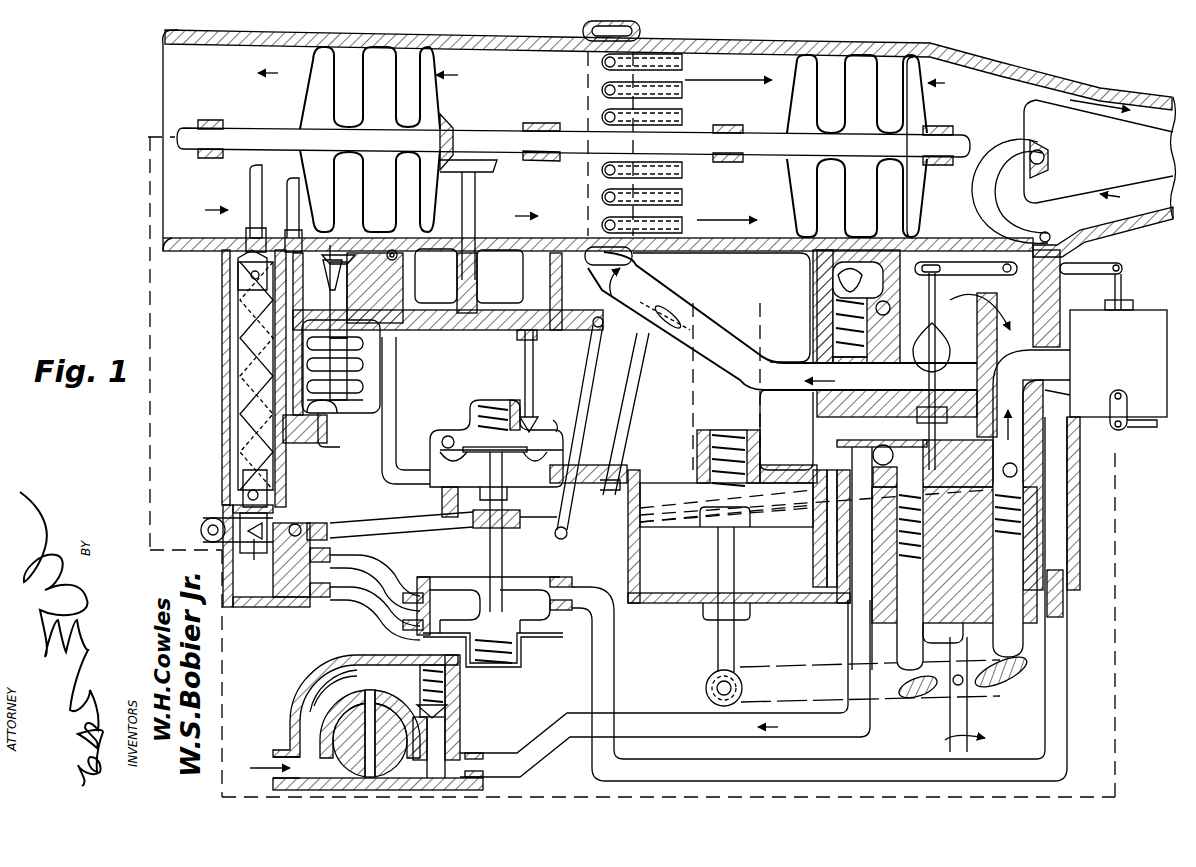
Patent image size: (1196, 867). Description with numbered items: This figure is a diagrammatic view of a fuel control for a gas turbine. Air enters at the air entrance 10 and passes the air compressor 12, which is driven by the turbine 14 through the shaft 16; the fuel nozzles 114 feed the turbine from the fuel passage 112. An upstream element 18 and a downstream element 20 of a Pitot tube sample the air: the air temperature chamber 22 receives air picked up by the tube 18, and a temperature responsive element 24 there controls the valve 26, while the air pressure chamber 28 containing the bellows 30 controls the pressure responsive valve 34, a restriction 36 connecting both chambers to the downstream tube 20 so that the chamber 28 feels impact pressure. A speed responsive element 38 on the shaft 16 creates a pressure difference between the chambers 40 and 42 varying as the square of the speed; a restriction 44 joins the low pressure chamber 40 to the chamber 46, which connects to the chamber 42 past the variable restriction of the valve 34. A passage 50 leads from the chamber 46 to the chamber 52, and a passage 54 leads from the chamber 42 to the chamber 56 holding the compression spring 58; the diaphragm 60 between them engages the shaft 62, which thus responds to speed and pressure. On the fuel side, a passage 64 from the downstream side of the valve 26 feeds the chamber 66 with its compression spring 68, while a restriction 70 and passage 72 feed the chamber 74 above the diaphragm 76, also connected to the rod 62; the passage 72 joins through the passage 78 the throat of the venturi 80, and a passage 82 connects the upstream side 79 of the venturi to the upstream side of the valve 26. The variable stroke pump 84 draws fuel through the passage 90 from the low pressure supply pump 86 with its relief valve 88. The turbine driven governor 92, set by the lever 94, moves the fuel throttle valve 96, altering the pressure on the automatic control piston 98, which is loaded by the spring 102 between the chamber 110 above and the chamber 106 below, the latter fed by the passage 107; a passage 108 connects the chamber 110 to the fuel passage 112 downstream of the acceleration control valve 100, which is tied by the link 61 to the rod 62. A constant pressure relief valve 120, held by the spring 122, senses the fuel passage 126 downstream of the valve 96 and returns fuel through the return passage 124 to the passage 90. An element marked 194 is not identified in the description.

The air entrance 10 is at (242, 66).
The air compressor 12 is at (312, 60).
The turbine 14 is at (792, 102).
The shaft 16 is at (480, 131).
The upstream element of Pitot tube 18 is at (250, 172).
The downstream element of Pitot tube 20 is at (298, 182).
The speed responsive element 38 is at (477, 194).
The pressure responsive valve 34 is at (336, 248).
The chamber 46 is at (394, 250).
The restriction 44 is at (414, 266).
The low pressure chamber 40 is at (507, 282).
The chamber 42 is at (322, 299).
The temperature responsive element 24 is at (240, 298).
The air temperature chamber 22 is at (228, 335).
The passage 50 is at (398, 360).
The air pressure chamber 28 is at (365, 382).
The bellows 30 is at (365, 398).
The restriction 36 is at (332, 412).
The passage 54 is at (524, 368).
The compression spring 58 is at (470, 412).
The chamber 52 is at (534, 480).
The movable wall or diaphragm 60 is at (449, 468).
The chamber 56 is at (556, 423).
The link 61 is at (588, 363).
The fuel passage 112 is at (600, 285).
The valve 100 is at (667, 310).
The fuel passage 126 is at (728, 352).
The passage 108 is at (630, 400).
The compression spring 102 is at (708, 432).
The compression spring 122 is at (832, 320).
The constant pressure relief valve 120 is at (856, 290).
The return fuel passage 124 is at (888, 304).
The fuel throttle valve 96 is at (940, 346).
The venturi 80 is at (1045, 345).
The upstream side of venturi 79 is at (1071, 394).
The passage 107 is at (1060, 288).
The lever 94 is at (1152, 428).
The governor 92 is at (1113, 345).
The valve 26 is at (230, 492).
The restriction 70 is at (280, 558).
The passage 82 is at (372, 522).
The passage 72 is at (368, 575).
The passage 64 is at (362, 605).
The chamber 74 is at (445, 580).
The shaft 62 is at (504, 553).
The moving wall or diaphragm 76 is at (560, 580).
The chamber 66 is at (522, 640).
The compression spring 68 is at (520, 666).
The passage 78 is at (614, 630).
The passage 90 is at (563, 716).
The chamber 106 is at (690, 575).
The chamber 110 is at (795, 521).
The automatic control piston 98 is at (788, 545).
The variable stroke pump 84 is at (977, 553).
The lever 194 is at (1012, 683).
The low pressure fuel supply pump 86 is at (296, 735).
The pressure relief valve 88 is at (448, 715).
The fuel nozzles 114 is at (672, 190).